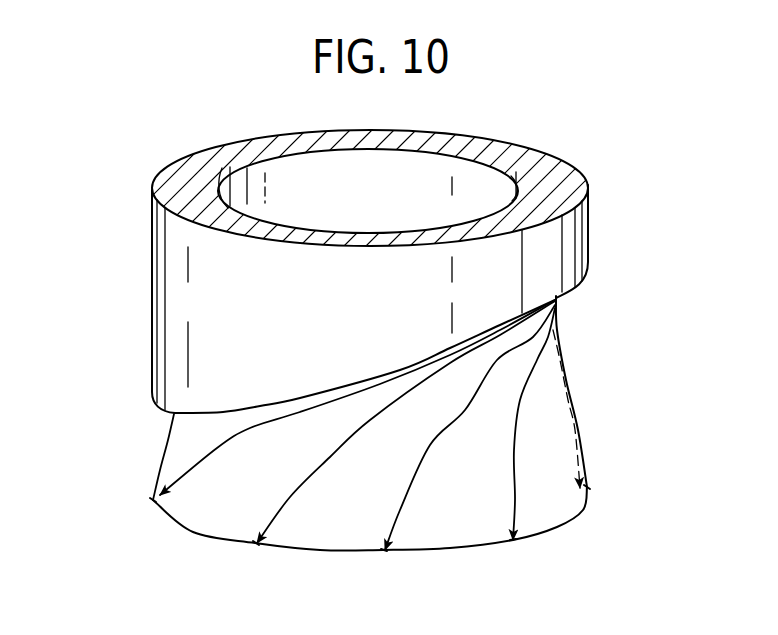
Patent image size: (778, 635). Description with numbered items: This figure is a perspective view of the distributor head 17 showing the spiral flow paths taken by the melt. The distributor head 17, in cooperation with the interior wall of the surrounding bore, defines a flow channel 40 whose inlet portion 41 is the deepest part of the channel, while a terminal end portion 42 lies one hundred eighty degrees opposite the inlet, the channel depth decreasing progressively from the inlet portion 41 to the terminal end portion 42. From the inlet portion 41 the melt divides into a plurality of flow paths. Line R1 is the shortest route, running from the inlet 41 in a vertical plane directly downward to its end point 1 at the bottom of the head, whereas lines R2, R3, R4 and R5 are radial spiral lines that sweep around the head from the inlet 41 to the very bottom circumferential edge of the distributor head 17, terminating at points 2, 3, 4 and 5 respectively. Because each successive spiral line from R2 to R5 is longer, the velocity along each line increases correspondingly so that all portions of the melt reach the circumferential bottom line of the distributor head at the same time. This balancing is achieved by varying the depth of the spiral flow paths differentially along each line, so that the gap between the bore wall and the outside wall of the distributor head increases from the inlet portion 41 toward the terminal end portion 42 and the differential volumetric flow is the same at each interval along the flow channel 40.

The distributor head 17 is at (155, 344).
The flow channel 40 is at (565, 333).
The inlet portion 41 is at (558, 308).
The terminal end portion 42 is at (172, 414).
The flow line R1 is at (573, 398).
The spiral radial line R2 is at (534, 424).
The spiral radial line R3 is at (470, 427).
The spiral radial line R4 is at (406, 422).
The spiral radial line R5 is at (357, 397).
The point 1 on bottom edge 1 is at (597, 496).
The point 2 on bottom edge 2 is at (557, 527).
The point 3 on bottom edge 3 is at (503, 556).
The point 4 on bottom edge 4 is at (370, 583).
The point 5 on bottom edge 5 is at (148, 519).